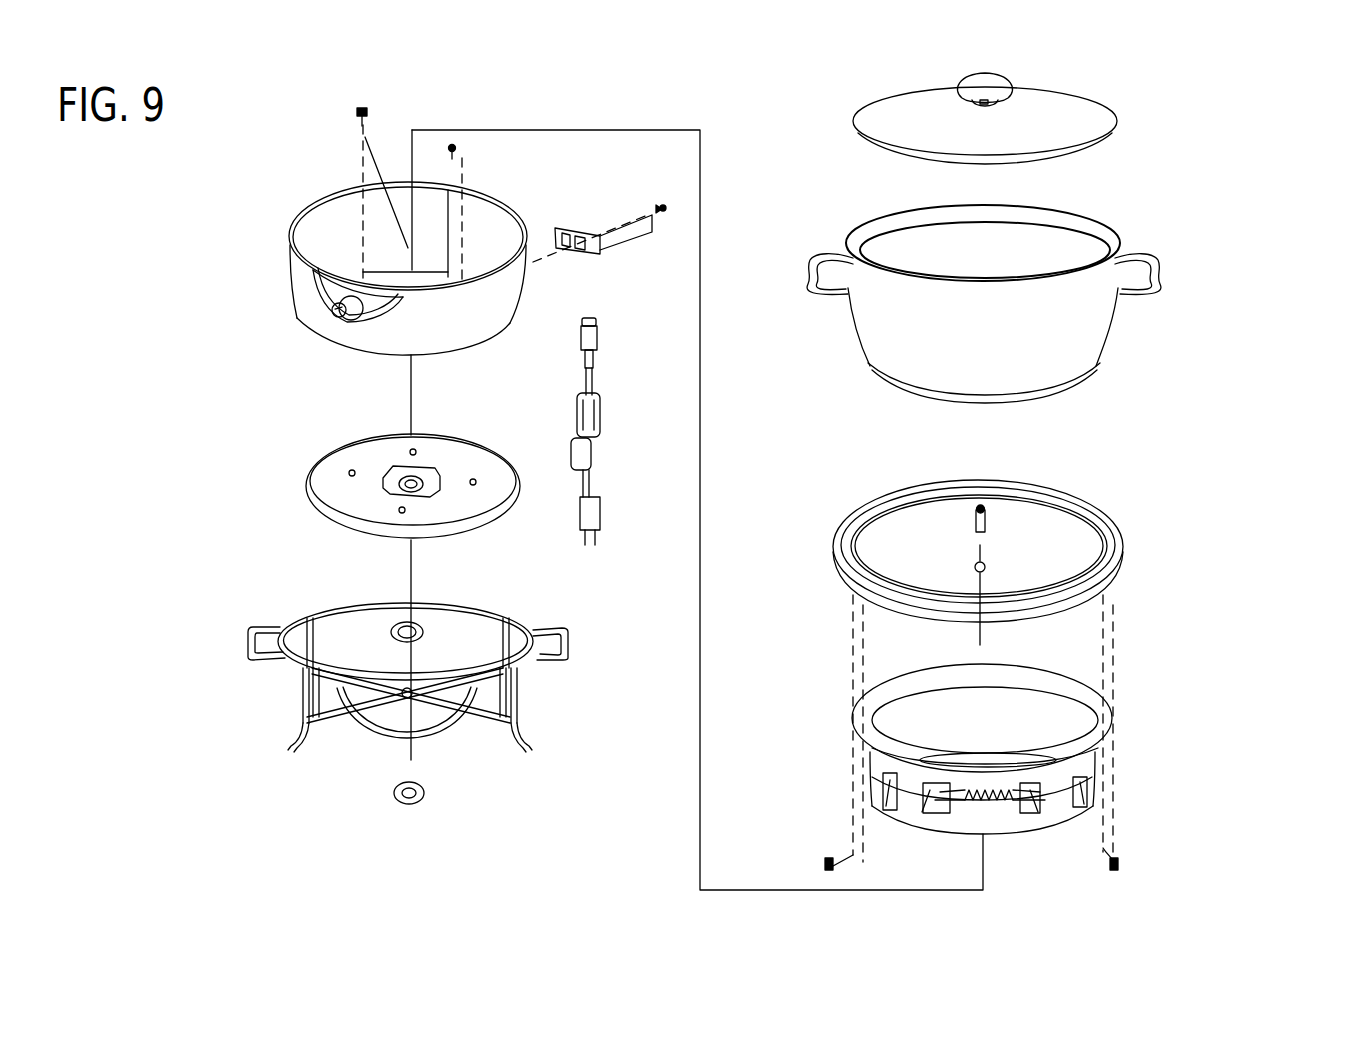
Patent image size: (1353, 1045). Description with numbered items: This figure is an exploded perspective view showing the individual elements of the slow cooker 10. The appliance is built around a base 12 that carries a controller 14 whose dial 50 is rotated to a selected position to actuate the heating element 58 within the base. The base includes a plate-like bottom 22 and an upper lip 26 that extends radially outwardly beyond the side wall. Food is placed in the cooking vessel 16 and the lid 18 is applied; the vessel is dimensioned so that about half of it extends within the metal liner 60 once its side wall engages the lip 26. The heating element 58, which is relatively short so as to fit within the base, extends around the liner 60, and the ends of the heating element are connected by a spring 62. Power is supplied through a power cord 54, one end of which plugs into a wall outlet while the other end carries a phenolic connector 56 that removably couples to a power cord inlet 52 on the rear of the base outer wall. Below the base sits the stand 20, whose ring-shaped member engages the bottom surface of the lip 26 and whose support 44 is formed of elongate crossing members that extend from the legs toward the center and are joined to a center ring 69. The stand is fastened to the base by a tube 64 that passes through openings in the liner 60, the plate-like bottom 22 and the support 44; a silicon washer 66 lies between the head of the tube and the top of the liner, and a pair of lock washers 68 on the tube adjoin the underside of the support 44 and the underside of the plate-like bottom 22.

The slow cooker 10 is at (1248, 152).
The base 12 is at (283, 211).
The controller 14 is at (375, 318).
The cooking vessel 16 is at (1122, 320).
The lid 18 is at (1125, 118).
The stand 20 is at (288, 608).
The plate-like bottom 22 is at (307, 482).
The upper lip 26 is at (1118, 545).
The support 44 is at (340, 716).
The dial 50 is at (333, 294).
The power cord inlet 52 is at (566, 226).
The power cord 54 is at (612, 418).
The phenolic connector 56 is at (597, 332).
The heating element 58 is at (1048, 800).
The metal liner 60 is at (1090, 757).
The spring 62 is at (983, 808).
The tube 64 is at (996, 522).
The silicon washer 66 is at (975, 567).
The lock washers 68 is at (395, 622).
The center ring 69 is at (413, 688).